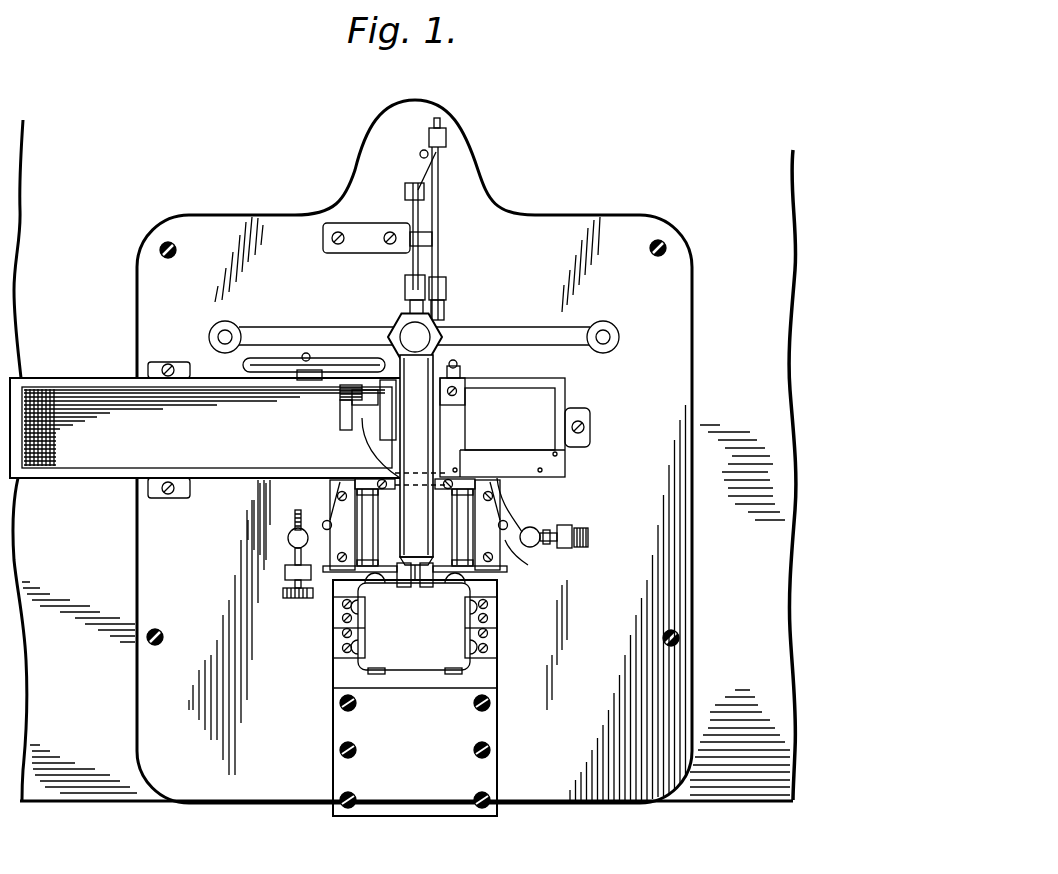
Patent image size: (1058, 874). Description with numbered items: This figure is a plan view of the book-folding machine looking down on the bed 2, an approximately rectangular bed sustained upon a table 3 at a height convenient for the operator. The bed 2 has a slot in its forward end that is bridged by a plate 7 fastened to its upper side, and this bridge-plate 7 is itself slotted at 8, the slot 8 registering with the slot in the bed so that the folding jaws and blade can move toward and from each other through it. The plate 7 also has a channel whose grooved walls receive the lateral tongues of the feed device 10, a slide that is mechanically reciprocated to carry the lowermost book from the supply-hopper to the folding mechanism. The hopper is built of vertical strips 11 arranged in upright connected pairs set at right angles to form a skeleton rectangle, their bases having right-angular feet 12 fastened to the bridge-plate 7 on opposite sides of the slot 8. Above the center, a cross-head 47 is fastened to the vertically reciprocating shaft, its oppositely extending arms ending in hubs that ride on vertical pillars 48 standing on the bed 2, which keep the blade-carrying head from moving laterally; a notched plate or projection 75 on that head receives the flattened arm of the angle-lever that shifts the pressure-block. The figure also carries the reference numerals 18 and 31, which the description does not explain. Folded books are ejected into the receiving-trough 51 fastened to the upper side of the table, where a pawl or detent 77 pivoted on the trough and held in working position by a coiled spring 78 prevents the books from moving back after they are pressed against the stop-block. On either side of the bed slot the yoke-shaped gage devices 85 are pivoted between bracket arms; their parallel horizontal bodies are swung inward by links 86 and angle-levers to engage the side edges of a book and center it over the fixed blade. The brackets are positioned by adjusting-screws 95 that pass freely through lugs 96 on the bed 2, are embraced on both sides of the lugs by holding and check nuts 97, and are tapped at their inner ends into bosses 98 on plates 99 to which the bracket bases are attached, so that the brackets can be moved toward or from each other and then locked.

The bed 2 is at (655, 577).
The table 3 is at (740, 787).
The bridge-plate 7 is at (437, 797).
The slot 8 is at (355, 687).
The feed device 10 is at (414, 621).
The vertical strips 11 is at (348, 614).
The right-angular feet 12 is at (497, 618).
The pivot hole 18 is at (605, 337).
The armature lever 31 is at (410, 577).
The cross-head 47 is at (518, 312).
The vertical pillars 48 is at (228, 335).
The receiving-trough 51 is at (80, 477).
The plate or projection 75 is at (385, 352).
The pawl or detent 77 is at (366, 425).
The coiled spring 78 is at (345, 400).
The gage devices 85 is at (372, 525).
The links 86 is at (497, 483).
The adjusting-screws 95 is at (586, 532).
The lugs 96 is at (565, 524).
The holding and check nuts 97 is at (553, 545).
The bosses 98 is at (533, 532).
The plates 99 is at (515, 548).